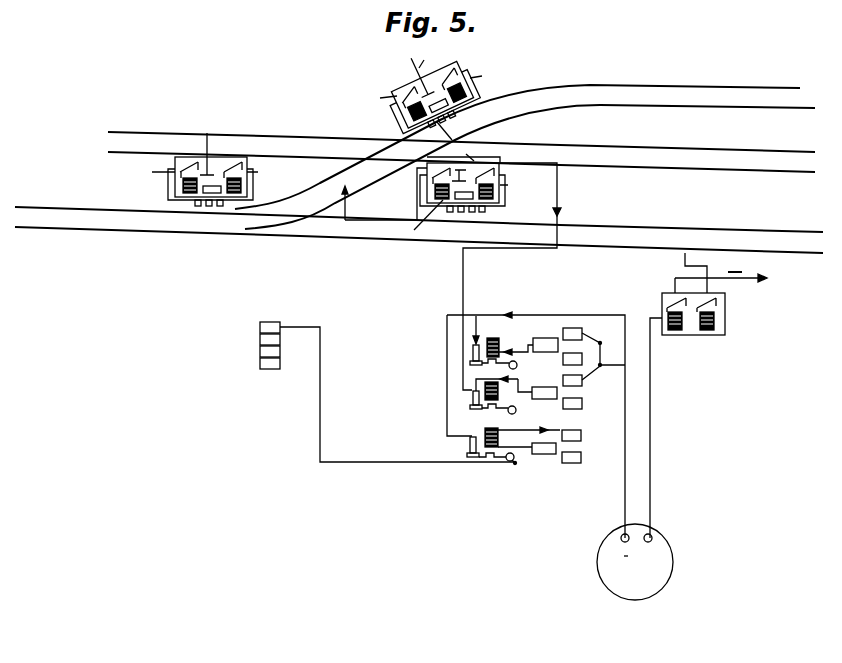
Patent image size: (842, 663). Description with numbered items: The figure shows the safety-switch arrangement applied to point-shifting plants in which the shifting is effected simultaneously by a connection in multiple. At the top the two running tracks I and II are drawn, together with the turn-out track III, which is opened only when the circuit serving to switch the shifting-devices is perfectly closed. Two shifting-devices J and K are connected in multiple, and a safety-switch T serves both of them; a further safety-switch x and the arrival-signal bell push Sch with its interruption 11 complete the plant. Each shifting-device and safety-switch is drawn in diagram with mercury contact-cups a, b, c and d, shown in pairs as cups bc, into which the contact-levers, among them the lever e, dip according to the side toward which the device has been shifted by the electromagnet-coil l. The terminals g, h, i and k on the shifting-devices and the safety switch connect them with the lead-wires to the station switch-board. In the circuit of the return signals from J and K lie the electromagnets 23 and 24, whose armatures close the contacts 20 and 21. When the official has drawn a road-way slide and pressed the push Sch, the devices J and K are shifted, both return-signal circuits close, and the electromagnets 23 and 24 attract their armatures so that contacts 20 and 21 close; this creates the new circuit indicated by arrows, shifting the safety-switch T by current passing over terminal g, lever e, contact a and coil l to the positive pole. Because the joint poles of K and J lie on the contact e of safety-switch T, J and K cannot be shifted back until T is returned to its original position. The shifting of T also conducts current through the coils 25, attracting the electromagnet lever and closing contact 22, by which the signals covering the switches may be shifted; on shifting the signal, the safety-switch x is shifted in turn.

The track I is at (419, 230).
The track II is at (461, 152).
The turn-out track III is at (525, 157).
The shifting-device J is at (211, 155).
The shifting-device K is at (437, 88).
The safety-switch T is at (451, 236).
The contact-cup a is at (294, 135).
The contact-cup b is at (460, 175).
The contact-cup c is at (464, 192).
The contact-cup d is at (371, 130).
The contact-lever e is at (463, 152).
The contact-cups bc is at (308, 109).
The terminal g is at (198, 206).
The terminal h is at (209, 206).
The terminal i is at (220, 206).
The terminal k is at (482, 212).
The electromagnet-coil l is at (422, 222).
The safety-switch x is at (718, 323).
The contact 20 is at (471, 365).
The contact 21 is at (471, 408).
The contact 22 is at (468, 453).
The electromagnet 23 is at (500, 347).
The electromagnet 24 is at (500, 393).
The coils 25 is at (500, 441).
The bell push Sch is at (655, 566).
The interruption 11 is at (628, 556).